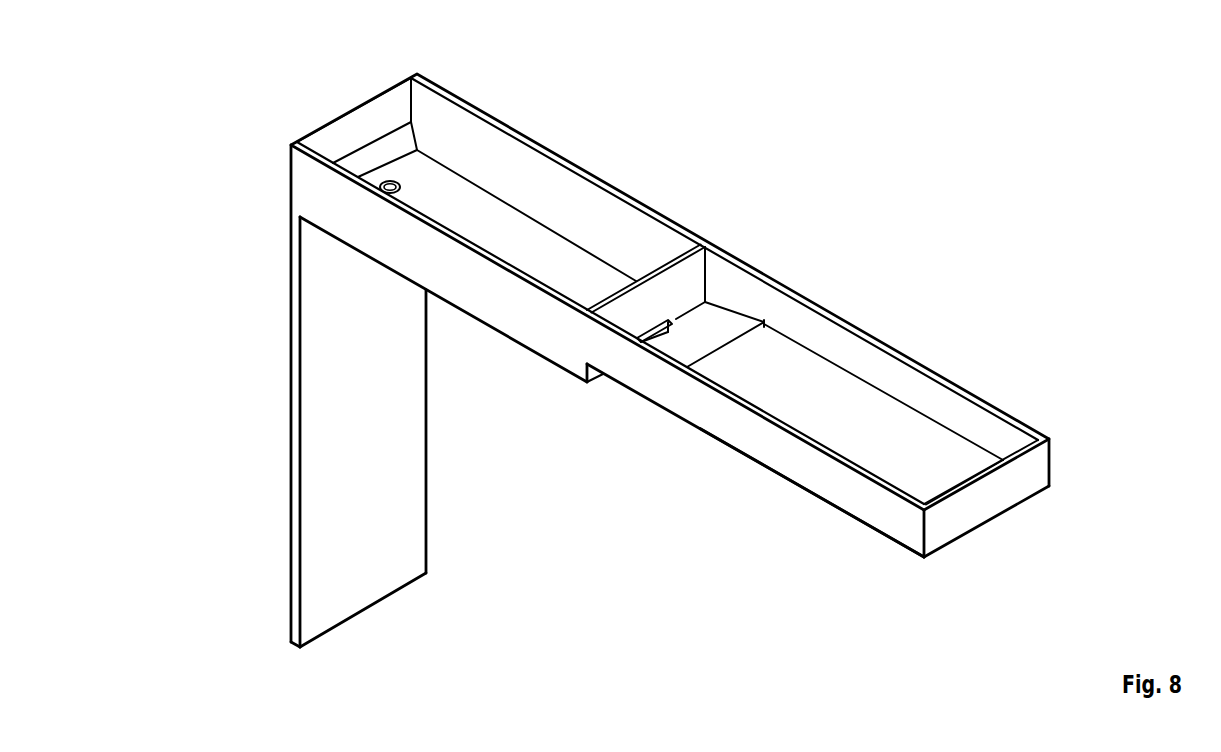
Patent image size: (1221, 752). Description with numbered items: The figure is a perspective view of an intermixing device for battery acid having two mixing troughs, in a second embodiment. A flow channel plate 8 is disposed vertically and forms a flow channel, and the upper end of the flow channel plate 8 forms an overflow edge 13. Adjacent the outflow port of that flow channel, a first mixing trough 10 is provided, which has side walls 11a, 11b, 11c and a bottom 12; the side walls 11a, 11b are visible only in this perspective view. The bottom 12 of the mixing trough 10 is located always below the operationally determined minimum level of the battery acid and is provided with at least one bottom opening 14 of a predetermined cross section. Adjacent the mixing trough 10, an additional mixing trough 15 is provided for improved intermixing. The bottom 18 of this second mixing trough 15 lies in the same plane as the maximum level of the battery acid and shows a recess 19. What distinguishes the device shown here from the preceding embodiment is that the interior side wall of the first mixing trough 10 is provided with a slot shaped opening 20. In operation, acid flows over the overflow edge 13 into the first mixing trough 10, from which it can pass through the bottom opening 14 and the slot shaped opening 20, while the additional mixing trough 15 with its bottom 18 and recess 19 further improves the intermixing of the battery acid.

The flow channel plate 8 is at (322, 348).
The mixing trough 10 is at (498, 195).
The side wall 11a is at (591, 223).
The side wall 11b is at (541, 323).
The side wall 11c is at (668, 263).
The bottom 12 is at (480, 340).
The overflow edge 13 is at (363, 143).
The bottom opening 14 is at (394, 180).
The additional mixing trough 15 is at (888, 405).
The bottom 18 is at (770, 490).
The recess 19 is at (722, 312).
The slot shaped opening 20 is at (658, 352).